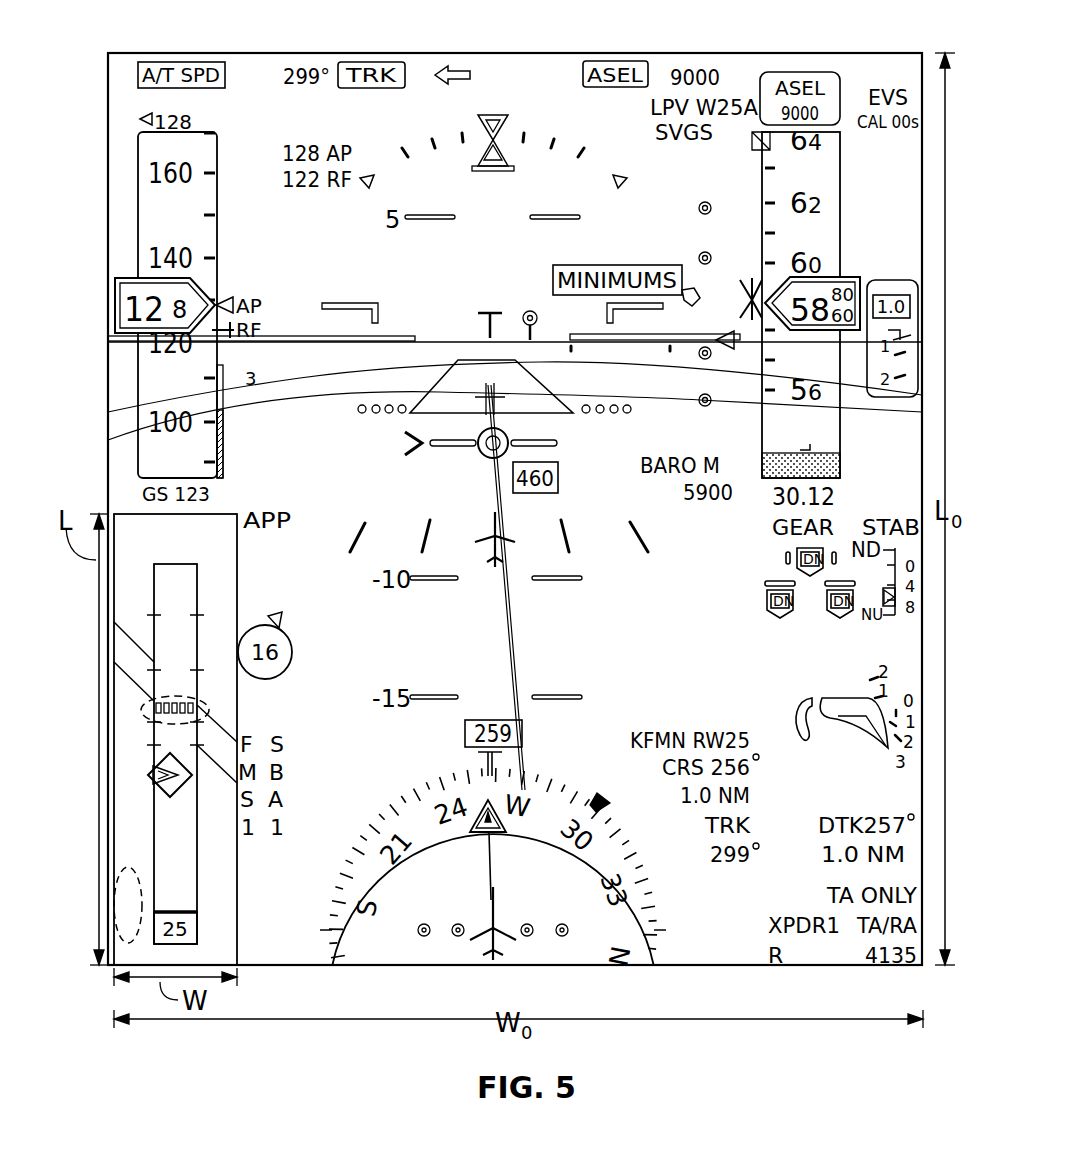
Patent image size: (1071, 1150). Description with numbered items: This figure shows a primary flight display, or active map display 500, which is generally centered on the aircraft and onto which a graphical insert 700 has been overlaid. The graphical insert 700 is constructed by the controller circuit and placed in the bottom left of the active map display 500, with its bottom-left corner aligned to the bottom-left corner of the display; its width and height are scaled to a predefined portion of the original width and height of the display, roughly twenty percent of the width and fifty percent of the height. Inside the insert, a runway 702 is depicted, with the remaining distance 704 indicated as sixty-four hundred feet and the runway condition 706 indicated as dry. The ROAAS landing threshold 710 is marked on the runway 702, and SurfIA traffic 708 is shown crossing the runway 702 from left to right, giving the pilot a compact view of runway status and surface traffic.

The active map display 500 is at (134, 46).
The graphical insert 700 is at (133, 513).
The runway 702 is at (152, 820).
The remaining distance 704 is at (155, 957).
The runway condition indication 706 is at (128, 866).
The SurfIA traffic 708 is at (160, 770).
The ROAAS landing threshold 710 is at (138, 697).